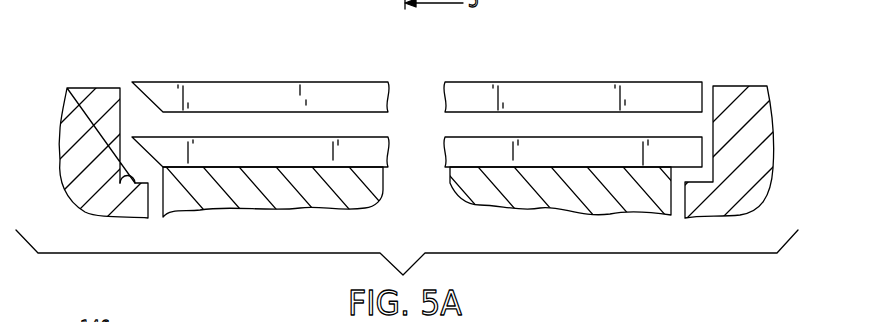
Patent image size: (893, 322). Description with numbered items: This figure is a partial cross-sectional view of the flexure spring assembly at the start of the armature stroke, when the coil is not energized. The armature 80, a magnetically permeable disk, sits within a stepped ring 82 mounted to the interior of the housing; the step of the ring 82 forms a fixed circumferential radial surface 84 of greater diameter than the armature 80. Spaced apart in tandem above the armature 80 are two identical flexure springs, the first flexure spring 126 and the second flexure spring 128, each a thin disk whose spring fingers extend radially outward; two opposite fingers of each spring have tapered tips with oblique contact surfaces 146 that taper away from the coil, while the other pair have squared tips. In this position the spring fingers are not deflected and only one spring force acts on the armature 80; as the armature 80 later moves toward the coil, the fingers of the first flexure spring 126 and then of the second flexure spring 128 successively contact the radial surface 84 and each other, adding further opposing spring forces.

The oblique contact surface 146 is at (148, 98).
The second flexure spring 128 is at (580, 97).
The first flexure spring 126 is at (557, 153).
The ring 82 is at (738, 112).
The circumferential radial surface 84 is at (117, 176).
The armature 80 is at (512, 190).